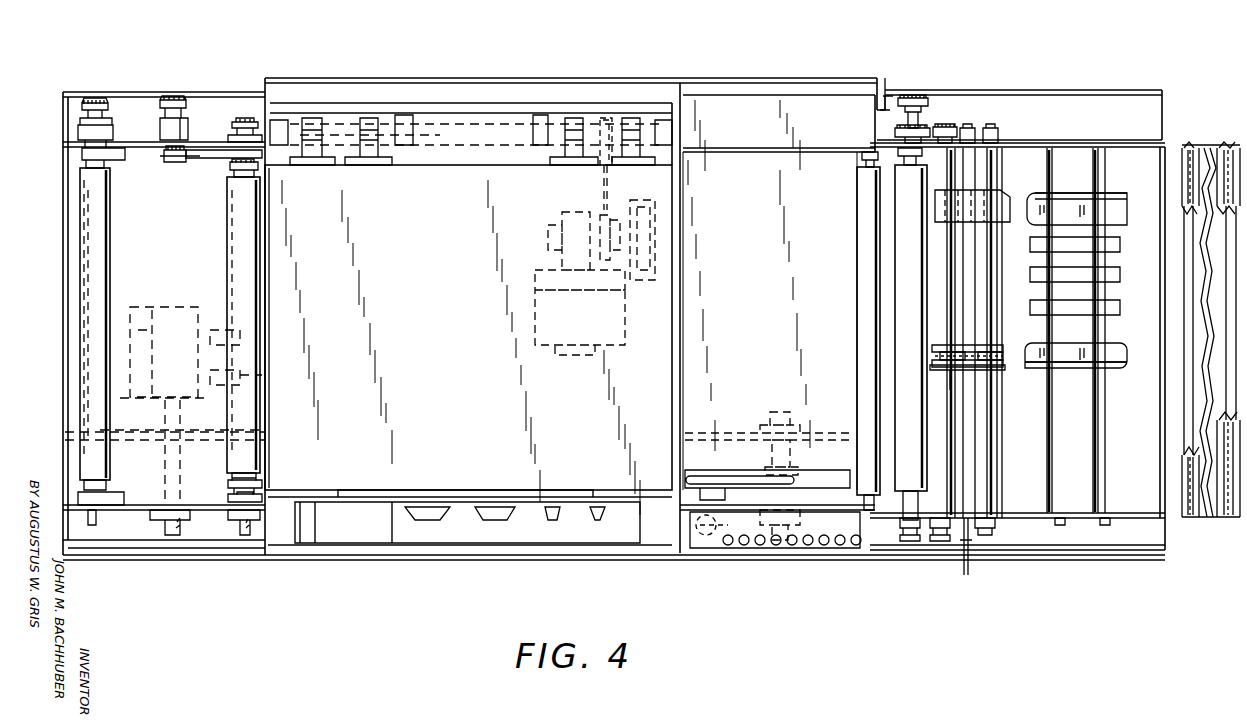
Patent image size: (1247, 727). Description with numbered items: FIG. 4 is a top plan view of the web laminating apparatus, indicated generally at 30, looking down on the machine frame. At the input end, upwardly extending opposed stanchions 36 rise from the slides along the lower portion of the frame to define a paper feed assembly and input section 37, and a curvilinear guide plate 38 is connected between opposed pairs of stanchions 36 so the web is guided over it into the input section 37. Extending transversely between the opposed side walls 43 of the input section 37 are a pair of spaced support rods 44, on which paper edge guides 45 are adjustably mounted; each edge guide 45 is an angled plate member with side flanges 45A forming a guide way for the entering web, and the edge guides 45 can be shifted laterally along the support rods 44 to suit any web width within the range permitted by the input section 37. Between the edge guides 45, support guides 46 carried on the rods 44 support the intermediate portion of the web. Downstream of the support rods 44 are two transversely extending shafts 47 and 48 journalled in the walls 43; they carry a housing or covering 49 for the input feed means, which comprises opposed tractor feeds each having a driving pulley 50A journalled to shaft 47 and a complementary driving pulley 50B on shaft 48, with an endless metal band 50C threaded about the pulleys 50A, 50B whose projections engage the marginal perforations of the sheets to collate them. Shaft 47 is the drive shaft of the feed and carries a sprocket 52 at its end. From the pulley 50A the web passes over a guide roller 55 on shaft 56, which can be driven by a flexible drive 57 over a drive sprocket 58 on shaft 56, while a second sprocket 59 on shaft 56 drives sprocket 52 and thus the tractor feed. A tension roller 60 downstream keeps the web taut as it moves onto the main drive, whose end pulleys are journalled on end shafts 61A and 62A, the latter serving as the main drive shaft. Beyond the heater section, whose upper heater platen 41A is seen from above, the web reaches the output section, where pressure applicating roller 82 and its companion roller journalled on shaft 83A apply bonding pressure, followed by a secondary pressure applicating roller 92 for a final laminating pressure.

The film processing unit 30 is at (998, 60).
The stanchions 36 is at (1224, 393).
The input section 37 is at (1103, 564).
The curvilinear guide plate 38 is at (1193, 148).
The upper heater platen 41A is at (400, 324).
The side walls 43 is at (1022, 143).
The support rods 44 is at (1085, 480).
The paper edge guides 45 is at (1110, 198).
The side flanges 45A is at (1083, 200).
The spacer plates 46 is at (1107, 245).
The shaft 47 is at (935, 412).
The shaft 48 is at (988, 440).
The housing 49 is at (995, 203).
The driving pulley 50A is at (965, 352).
The driving pulley 50B is at (978, 362).
The metal band 50C is at (977, 347).
The sprocket 52 is at (950, 127).
The guide roller 55 is at (903, 213).
The shaft 56 is at (910, 157).
The flexible drive 57 is at (888, 97).
The drive sprocket 58 is at (915, 103).
The sprocket 59 is at (925, 127).
The tension roller 60 is at (867, 278).
The end shaft 61A is at (780, 540).
The main drive shaft 62A is at (173, 535).
The pressure applicating roller 82 is at (235, 262).
The shaft 83A is at (245, 533).
The secondary pressure applicating roller 92 is at (97, 233).